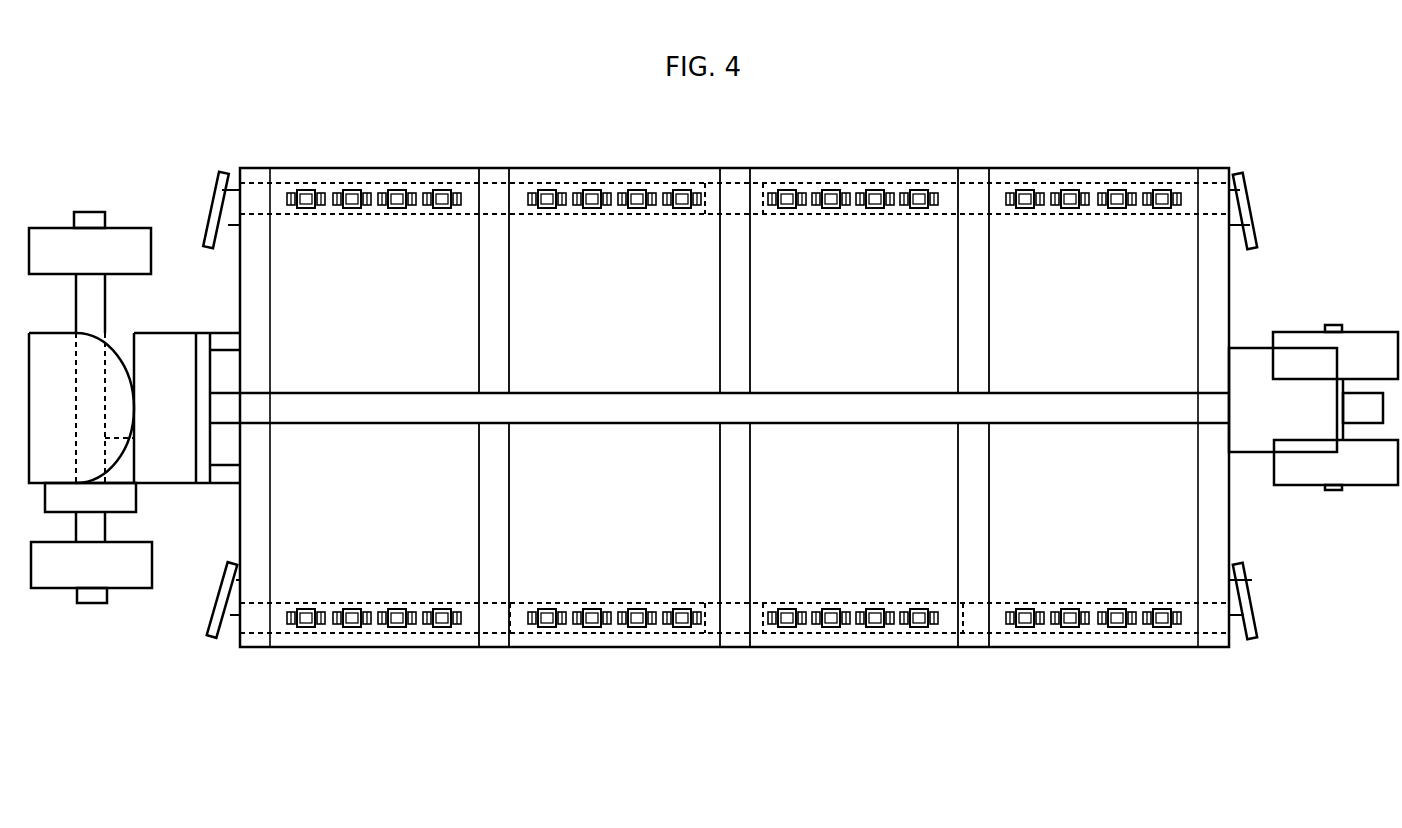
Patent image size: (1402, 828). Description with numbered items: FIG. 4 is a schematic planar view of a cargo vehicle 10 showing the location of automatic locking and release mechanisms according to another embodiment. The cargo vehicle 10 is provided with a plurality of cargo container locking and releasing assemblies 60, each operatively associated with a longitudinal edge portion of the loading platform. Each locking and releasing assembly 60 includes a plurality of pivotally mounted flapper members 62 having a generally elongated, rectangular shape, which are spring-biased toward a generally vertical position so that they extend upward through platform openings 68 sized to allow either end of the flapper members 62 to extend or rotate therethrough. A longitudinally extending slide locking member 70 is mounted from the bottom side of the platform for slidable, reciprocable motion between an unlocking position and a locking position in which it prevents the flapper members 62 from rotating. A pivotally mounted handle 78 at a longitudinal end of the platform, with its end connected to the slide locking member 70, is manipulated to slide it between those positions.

The cargo vehicle 10 is at (581, 102).
The cargo container locking and releasing assembly 60 is at (396, 108).
The flapper member 62 is at (352, 190).
The platform opening 68 is at (397, 208).
The slide locking member 70 is at (493, 213).
The handle 78 is at (213, 200).